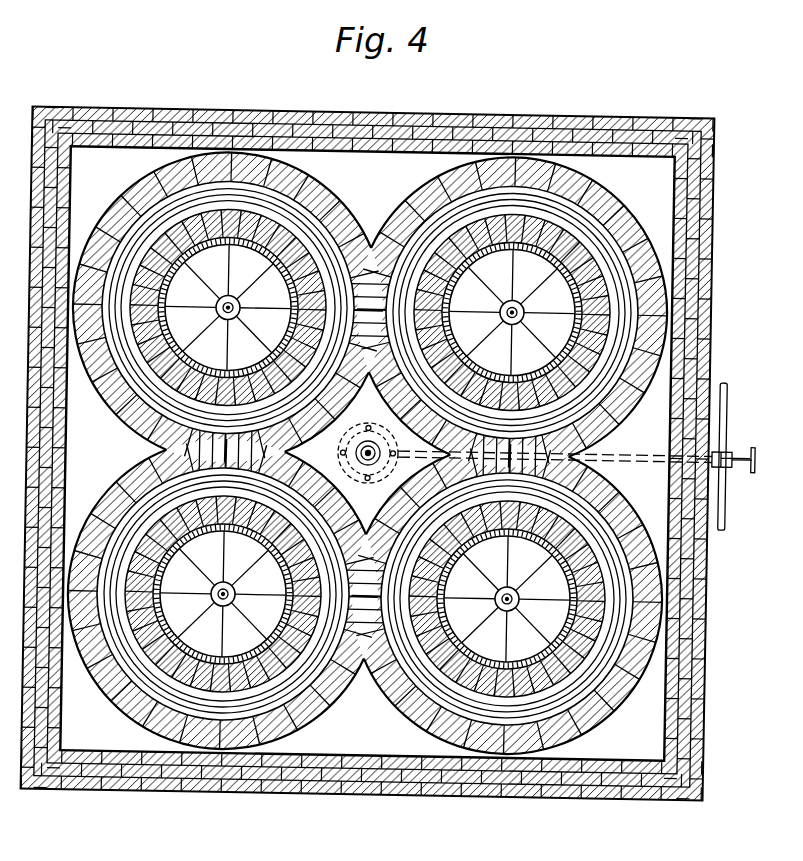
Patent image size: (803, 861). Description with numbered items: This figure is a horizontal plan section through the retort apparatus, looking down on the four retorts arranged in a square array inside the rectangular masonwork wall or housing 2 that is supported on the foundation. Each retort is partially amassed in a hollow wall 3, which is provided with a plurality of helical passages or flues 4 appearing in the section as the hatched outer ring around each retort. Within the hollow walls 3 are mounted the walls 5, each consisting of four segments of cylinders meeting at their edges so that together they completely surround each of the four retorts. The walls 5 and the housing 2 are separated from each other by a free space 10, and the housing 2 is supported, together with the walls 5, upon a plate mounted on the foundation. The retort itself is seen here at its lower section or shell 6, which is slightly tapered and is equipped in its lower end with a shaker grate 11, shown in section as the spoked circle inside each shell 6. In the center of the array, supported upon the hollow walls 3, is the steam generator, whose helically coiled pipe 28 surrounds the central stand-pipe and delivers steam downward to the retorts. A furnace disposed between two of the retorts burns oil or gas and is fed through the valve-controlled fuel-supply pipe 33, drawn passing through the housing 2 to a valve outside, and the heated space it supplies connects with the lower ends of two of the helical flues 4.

The rectangular wall or housing 2 is at (712, 302).
The hollow wall 3 is at (400, 208).
The helical passages or flues 4 is at (124, 203).
The walls 5 is at (628, 421).
The shell 6 is at (292, 318).
The free space 10 is at (703, 607).
The shaker grates 11 is at (367, 453).
The helically coiled pipe 28 is at (340, 455).
The valve-controlled fuel-supply pipe 33 is at (650, 459).